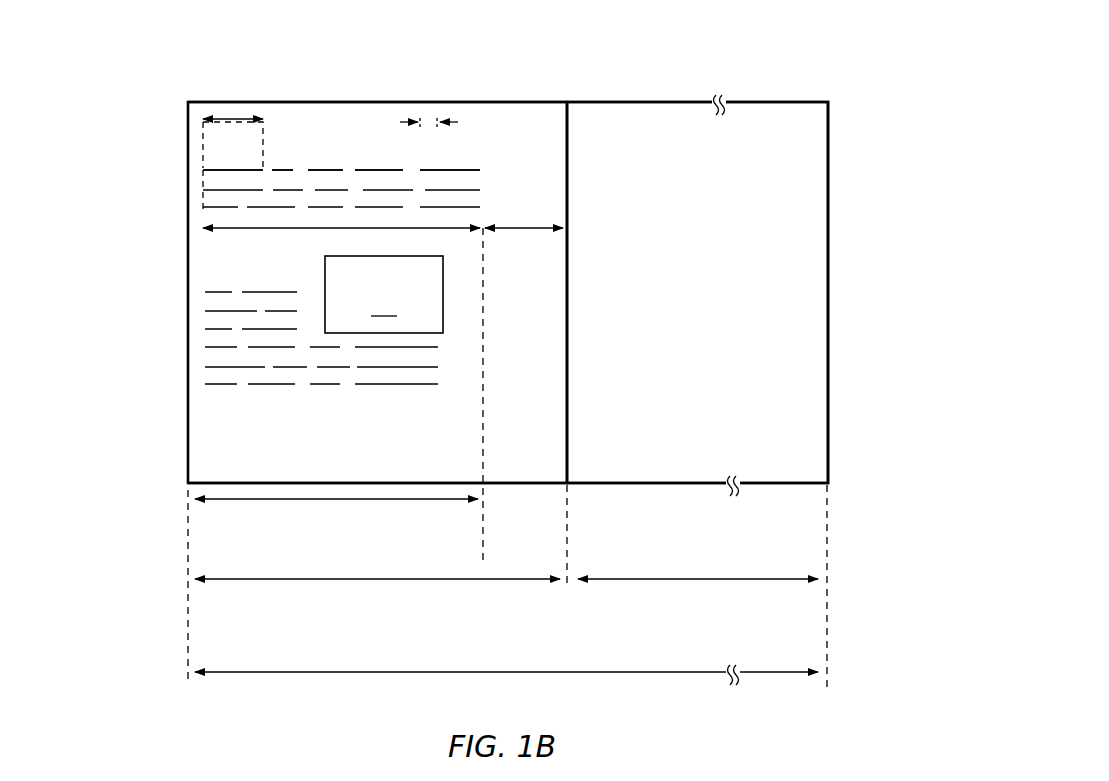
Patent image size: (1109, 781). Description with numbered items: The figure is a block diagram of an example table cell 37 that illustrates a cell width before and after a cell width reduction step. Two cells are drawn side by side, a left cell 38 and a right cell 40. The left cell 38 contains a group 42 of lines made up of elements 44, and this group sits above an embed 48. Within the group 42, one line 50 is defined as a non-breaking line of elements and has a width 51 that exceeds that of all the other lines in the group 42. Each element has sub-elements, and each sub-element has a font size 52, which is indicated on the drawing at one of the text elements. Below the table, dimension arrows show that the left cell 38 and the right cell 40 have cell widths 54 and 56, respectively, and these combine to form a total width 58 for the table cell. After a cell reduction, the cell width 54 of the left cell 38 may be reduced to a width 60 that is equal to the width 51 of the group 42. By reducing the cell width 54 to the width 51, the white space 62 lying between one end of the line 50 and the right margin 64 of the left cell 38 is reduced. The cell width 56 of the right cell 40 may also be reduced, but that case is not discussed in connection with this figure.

The table cell 37 is at (841, 100).
The left cell 38 is at (197, 430).
The right cell 40 is at (598, 483).
The group 42 is at (182, 232).
The elements 44 is at (318, 157).
The embed 48 is at (324, 320).
The line 50 is at (482, 170).
The width 51 is at (217, 230).
The font size 52 is at (429, 117).
The cell width 54 is at (283, 580).
The cell width 56 is at (623, 580).
The total width 58 is at (523, 671).
The width 60 is at (320, 500).
The white space 62 is at (519, 232).
The right margin 64 is at (569, 355).